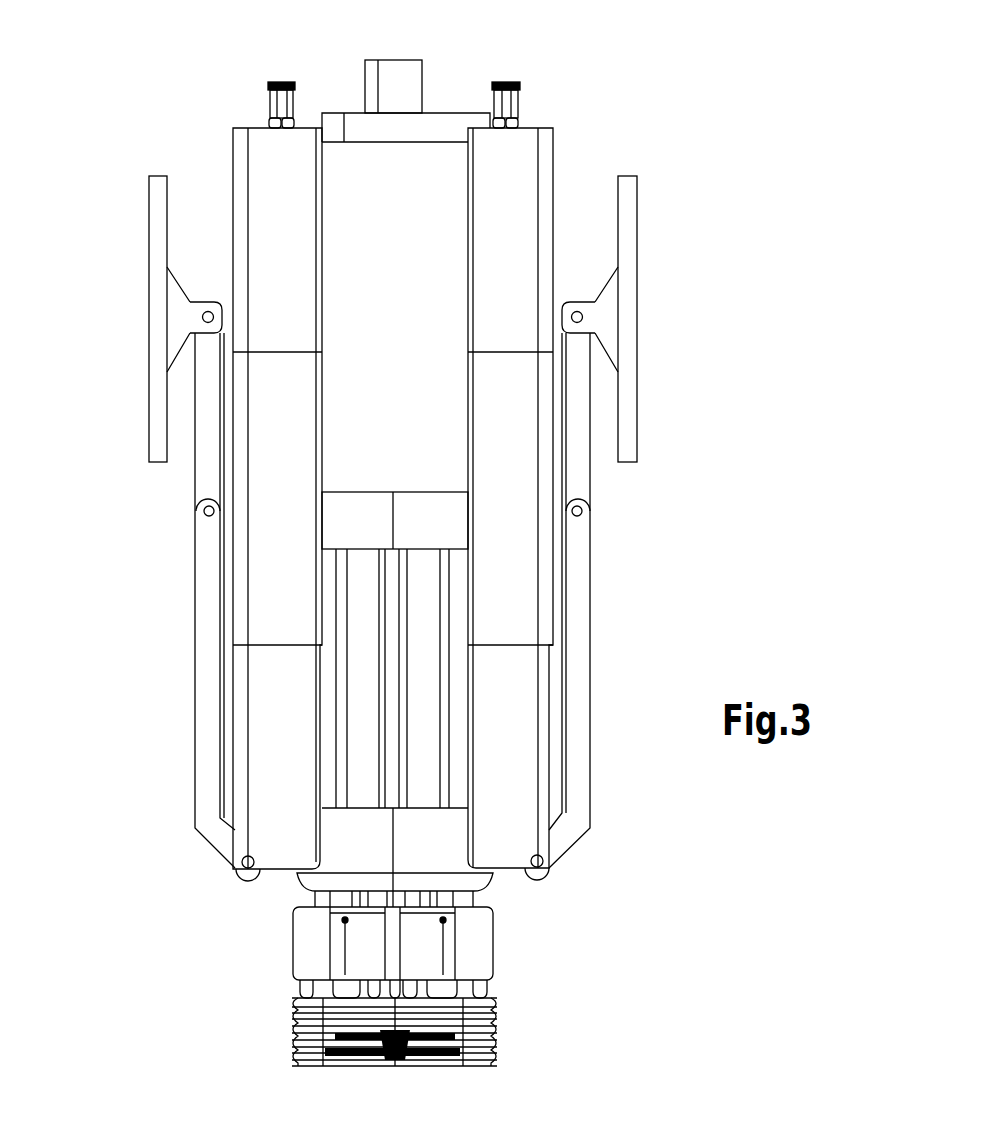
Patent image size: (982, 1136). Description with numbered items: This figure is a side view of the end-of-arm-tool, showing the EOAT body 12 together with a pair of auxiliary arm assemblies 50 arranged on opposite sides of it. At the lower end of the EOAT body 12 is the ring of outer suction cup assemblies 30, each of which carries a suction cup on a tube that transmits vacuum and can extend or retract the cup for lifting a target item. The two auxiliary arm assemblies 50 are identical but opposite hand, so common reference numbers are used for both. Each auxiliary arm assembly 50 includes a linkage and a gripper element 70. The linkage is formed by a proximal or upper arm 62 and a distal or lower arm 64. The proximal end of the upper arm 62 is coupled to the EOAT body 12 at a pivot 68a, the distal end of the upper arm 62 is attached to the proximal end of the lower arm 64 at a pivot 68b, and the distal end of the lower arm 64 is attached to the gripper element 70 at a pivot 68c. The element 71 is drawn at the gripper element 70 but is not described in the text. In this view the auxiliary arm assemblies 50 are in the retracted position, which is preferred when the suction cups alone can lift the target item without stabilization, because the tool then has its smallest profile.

The EOAT body 12 is at (498, 164).
The outer suction cup assemblies 30 is at (477, 1063).
The auxiliary arm assembly 50 is at (408, 525).
The gripper element 70 is at (668, 212).
The mounting fin 71 is at (158, 303).
The lower arm 64 is at (575, 465).
The upper arm 62 is at (578, 675).
The pivot 68c is at (208, 311).
The pivot 68b is at (197, 508).
The pivot 68a is at (260, 872).